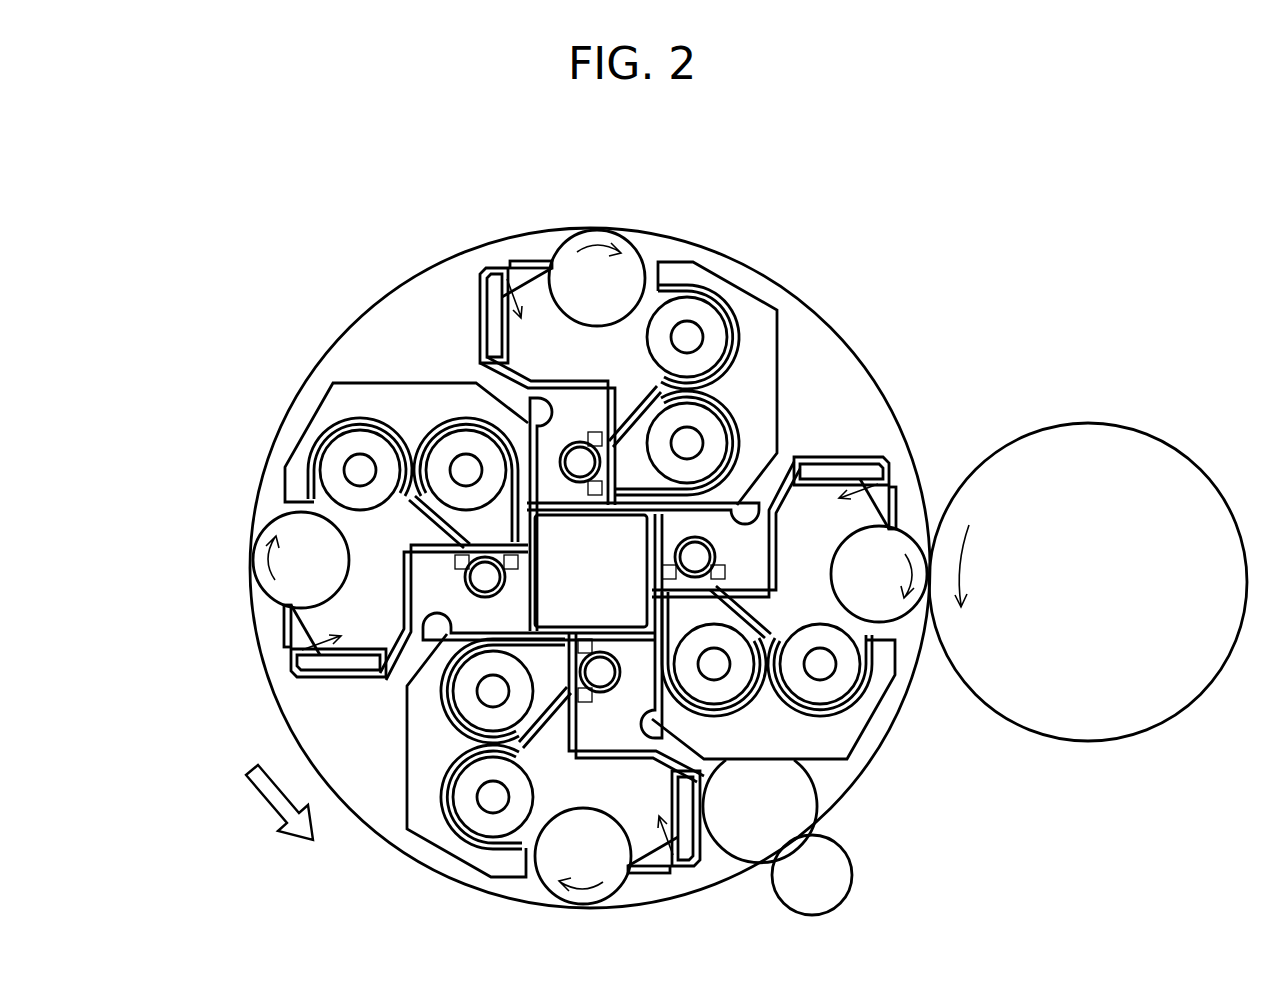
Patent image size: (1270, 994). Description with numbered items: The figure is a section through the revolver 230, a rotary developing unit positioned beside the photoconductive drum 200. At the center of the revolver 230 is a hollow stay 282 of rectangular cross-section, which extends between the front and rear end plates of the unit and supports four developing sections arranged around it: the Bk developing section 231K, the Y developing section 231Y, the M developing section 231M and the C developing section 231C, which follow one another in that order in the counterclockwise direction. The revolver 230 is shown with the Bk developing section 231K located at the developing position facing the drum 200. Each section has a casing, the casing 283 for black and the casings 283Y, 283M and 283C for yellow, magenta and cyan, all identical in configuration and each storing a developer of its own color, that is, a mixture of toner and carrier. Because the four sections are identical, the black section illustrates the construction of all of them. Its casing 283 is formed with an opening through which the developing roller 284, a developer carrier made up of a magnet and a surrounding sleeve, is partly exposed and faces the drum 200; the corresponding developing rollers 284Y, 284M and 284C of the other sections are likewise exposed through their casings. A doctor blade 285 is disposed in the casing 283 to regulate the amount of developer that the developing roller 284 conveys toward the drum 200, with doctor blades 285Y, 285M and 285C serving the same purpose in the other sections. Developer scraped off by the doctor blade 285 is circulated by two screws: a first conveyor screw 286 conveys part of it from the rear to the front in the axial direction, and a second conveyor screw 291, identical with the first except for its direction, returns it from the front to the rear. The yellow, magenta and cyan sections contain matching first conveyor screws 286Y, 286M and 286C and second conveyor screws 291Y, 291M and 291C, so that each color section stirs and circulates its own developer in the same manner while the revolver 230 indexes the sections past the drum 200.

The drum 200 is at (1177, 457).
The revolver 230 is at (888, 261).
The hollow stay 282 is at (538, 538).
The casing 283 is at (823, 500).
The casing 283Y is at (503, 263).
The casing 283M is at (297, 678).
The casing 283C is at (703, 857).
The developing roller 284 is at (927, 535).
The developing roller 284Y is at (600, 237).
The developing roller 284M is at (277, 517).
The developing roller 284C is at (540, 897).
The doctor blade 285 is at (888, 523).
The doctor blade 285Y is at (538, 262).
The doctor blade 285M is at (282, 620).
The doctor blade 285C is at (660, 880).
The first conveyor screw 286 is at (730, 700).
The first conveyor screw 286Y is at (665, 432).
The first conveyor screw 286M is at (460, 445).
The first conveyor screw 286C is at (468, 692).
The second conveyor screw 291 is at (843, 690).
The second conveyor screw 291Y is at (735, 295).
The second conveyor screw 291M is at (330, 457).
The second conveyor screw 291C is at (452, 853).
The Bk developing section 231K is at (870, 745).
The Y developing section 231Y is at (707, 268).
The M developing section 231M is at (320, 402).
The C developing section 231C is at (407, 857).